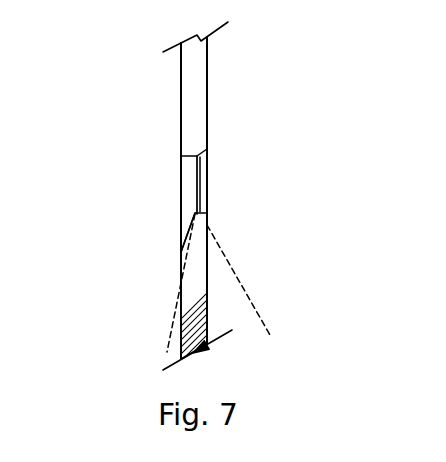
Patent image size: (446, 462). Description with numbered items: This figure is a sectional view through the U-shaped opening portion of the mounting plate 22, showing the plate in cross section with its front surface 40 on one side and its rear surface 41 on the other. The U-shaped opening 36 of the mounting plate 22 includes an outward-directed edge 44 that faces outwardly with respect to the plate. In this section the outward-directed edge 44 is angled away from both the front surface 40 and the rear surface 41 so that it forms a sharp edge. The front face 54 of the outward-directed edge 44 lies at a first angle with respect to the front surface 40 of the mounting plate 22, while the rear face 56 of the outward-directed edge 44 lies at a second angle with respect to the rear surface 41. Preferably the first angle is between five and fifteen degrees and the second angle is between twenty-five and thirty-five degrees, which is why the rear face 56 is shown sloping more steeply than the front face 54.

The mounting plate 22 is at (208, 45).
The U-shaped opening 36 is at (126, 149).
The front surface 40 is at (208, 63).
The rear surface 41 is at (181, 75).
The outward-directed edge 44 is at (203, 225).
The front face 54 is at (207, 221).
The rear face 56 is at (186, 231).